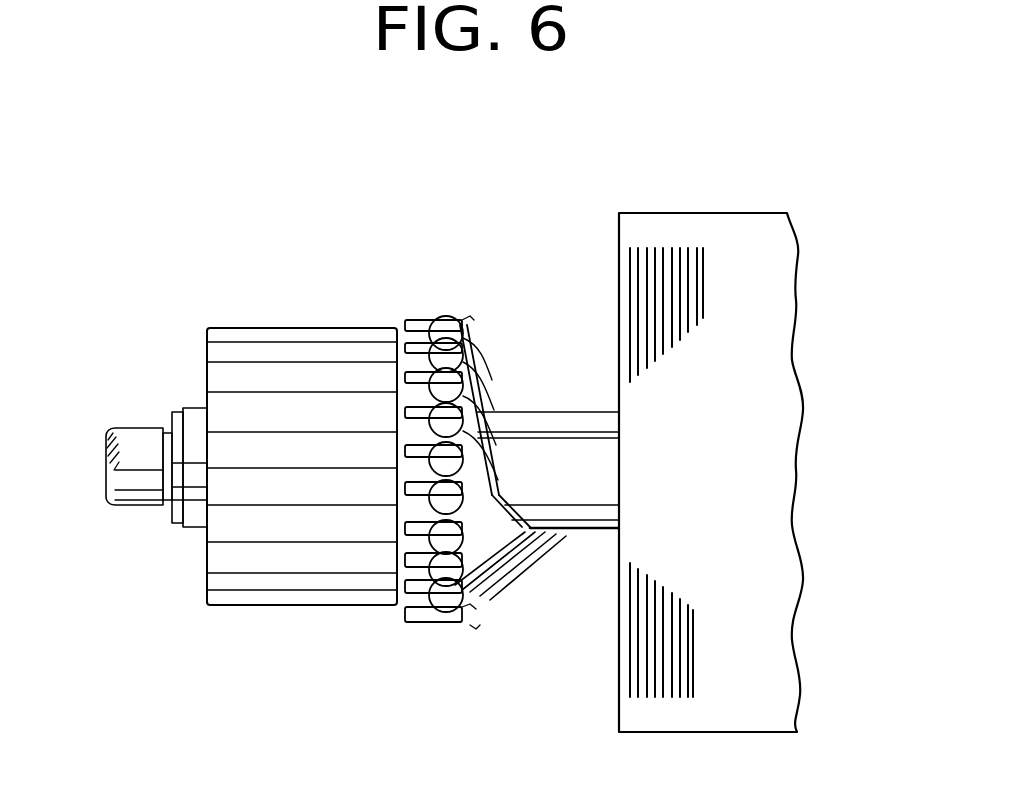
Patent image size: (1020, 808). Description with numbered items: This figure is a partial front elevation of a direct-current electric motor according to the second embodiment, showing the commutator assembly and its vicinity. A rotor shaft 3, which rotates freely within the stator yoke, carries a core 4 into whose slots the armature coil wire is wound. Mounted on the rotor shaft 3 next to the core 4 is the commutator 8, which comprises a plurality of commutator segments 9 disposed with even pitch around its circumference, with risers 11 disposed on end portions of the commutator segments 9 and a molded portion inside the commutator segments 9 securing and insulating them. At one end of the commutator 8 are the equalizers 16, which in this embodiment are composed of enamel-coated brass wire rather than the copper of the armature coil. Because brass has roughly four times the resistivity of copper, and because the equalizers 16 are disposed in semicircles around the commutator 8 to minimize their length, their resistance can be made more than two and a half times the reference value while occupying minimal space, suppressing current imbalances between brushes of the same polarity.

The rotor shaft 3 is at (590, 515).
The core 4 is at (697, 235).
The commutator 8 is at (348, 325).
The commutator segments 9 is at (283, 328).
The risers 11 is at (418, 318).
The equalizers 16 is at (475, 328).